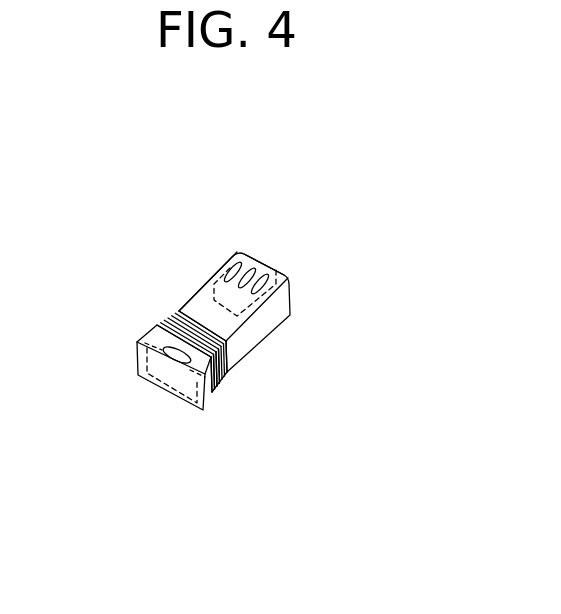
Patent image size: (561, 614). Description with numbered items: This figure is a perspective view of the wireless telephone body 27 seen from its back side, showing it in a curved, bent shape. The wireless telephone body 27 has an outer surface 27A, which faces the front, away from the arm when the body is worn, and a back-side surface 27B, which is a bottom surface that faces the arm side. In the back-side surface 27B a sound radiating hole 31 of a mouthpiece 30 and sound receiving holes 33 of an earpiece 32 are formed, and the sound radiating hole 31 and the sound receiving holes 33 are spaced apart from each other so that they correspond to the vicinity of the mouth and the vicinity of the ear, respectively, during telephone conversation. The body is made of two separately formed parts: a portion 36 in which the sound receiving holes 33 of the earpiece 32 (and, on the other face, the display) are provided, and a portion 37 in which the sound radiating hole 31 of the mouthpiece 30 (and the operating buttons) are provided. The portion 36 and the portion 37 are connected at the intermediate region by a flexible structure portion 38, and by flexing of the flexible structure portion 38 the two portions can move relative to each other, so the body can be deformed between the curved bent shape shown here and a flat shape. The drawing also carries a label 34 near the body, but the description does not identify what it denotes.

The wireless telephone body 27 is at (291, 288).
The surface (outer surface) 27A is at (266, 335).
The surface (bottom surface) 27B is at (192, 301).
The mouthpiece 30 is at (152, 368).
The sound radiating hole 31 is at (166, 348).
The earpiece 32 is at (292, 315).
The sound receiving holes 33 is at (268, 275).
The edge of body 34 is at (282, 272).
The portion 36 is at (245, 345).
The portion 37 is at (211, 392).
The flexible structure portion 38 is at (224, 386).